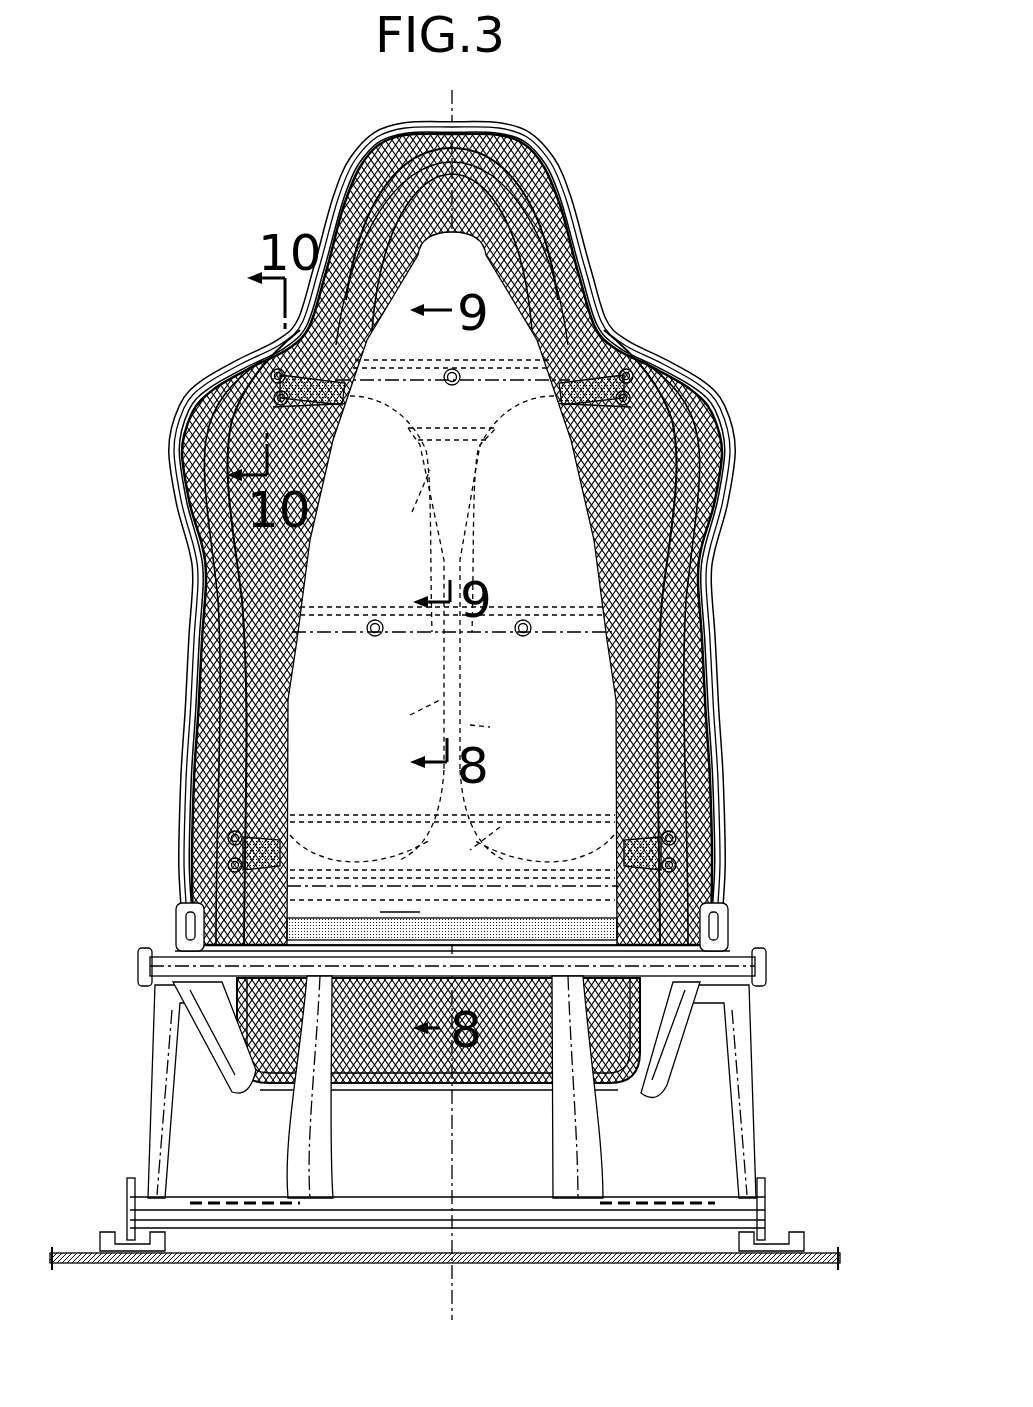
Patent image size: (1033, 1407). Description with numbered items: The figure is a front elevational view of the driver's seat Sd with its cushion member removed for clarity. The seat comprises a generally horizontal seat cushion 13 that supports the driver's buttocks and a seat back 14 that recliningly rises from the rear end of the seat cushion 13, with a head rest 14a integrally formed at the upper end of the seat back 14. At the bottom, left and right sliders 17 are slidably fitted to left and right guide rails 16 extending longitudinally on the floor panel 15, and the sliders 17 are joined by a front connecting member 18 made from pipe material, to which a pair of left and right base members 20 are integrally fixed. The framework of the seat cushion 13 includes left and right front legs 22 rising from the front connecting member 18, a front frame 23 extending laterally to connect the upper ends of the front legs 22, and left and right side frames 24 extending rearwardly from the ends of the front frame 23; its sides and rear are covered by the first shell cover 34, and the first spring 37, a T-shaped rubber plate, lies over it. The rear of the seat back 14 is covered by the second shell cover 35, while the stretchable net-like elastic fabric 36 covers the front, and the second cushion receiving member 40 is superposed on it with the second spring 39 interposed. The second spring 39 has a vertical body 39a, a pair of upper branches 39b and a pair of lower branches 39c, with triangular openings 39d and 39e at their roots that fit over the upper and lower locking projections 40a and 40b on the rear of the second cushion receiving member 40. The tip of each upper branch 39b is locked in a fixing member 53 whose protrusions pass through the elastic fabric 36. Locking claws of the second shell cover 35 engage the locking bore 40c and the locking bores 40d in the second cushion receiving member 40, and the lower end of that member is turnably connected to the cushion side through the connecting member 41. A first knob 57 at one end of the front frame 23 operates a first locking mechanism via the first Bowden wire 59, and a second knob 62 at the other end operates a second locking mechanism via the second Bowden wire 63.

The driver's seat Sd is at (636, 188).
The seat back 14 is at (744, 398).
The head rest 14a is at (488, 128).
The second shell cover 35 is at (190, 372).
The elastic fabric 36 is at (607, 527).
The fixing member 53 is at (262, 372).
The second cushion receiving member 40 is at (378, 697).
The upper locking projection 40a is at (490, 500).
The lower locking projection 40b is at (500, 827).
The locking bore 40c is at (461, 371).
The locking bores 40d is at (375, 620).
The second spring 39 is at (490, 727).
The body 39a is at (410, 715).
The upper branches 39b is at (382, 430).
The lower branches 39c is at (280, 832).
The upper triangular opening 39d is at (412, 512).
The lower triangular opening 39e is at (418, 835).
The connecting member 41 is at (390, 920).
The front frame 23 is at (284, 938).
The side frames 24 is at (180, 915).
The second knob 62 is at (138, 966).
The first knob 57 is at (766, 966).
The seat cushion 13 is at (469, 1090).
The first spring 37 is at (425, 1085).
The base members 20 is at (152, 1088).
The first shell cover 34 is at (228, 1073).
The front legs 22 is at (345, 1152).
The front connecting member 18 is at (385, 1222).
The second Bowden wire 63 is at (242, 1203).
The first Bowden wire 59 is at (677, 1208).
The sliders 17 is at (127, 1195).
The guide rails 16 is at (102, 1240).
The floor panel 15 is at (510, 1258).